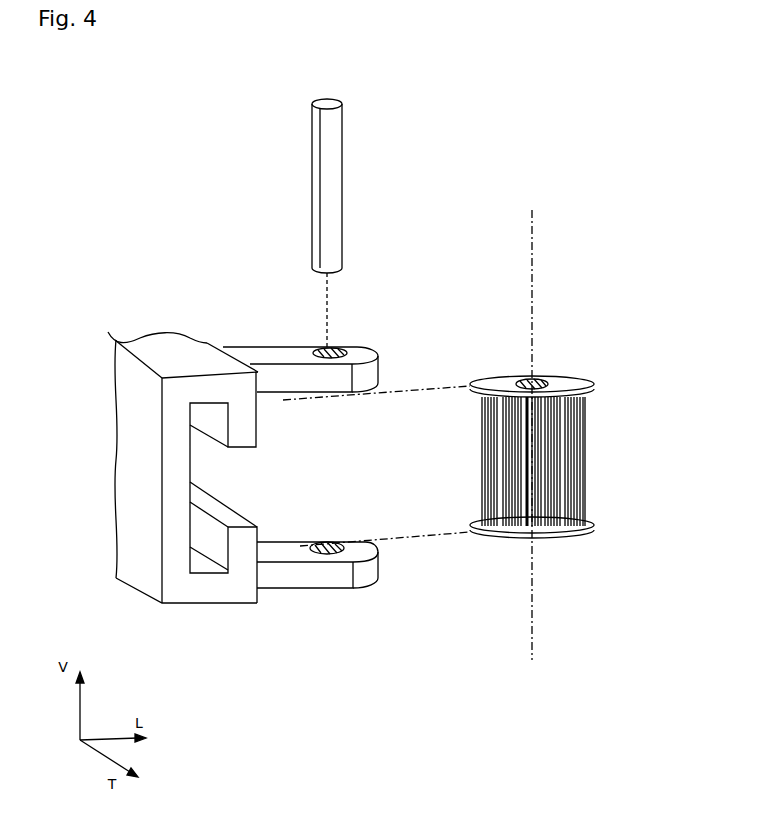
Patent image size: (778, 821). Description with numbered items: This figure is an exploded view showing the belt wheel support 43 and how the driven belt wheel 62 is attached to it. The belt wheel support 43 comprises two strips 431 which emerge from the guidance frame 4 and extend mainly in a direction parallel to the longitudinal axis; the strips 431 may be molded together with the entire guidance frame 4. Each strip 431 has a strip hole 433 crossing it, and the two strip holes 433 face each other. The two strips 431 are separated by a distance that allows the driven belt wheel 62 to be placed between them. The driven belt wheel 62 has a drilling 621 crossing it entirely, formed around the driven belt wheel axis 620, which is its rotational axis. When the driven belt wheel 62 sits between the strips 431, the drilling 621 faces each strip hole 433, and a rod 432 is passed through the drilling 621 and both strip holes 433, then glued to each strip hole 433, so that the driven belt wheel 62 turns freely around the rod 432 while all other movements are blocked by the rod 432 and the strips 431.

The guidance frame 4 is at (173, 533).
The belt wheel support 43 is at (283, 263).
The strip 431 is at (288, 382).
The rod 432 is at (325, 173).
The strip hole 433 is at (333, 350).
The driven belt wheel 62 is at (560, 451).
The driven belt wheel axis 620 is at (533, 242).
The drilling 621 is at (540, 381).